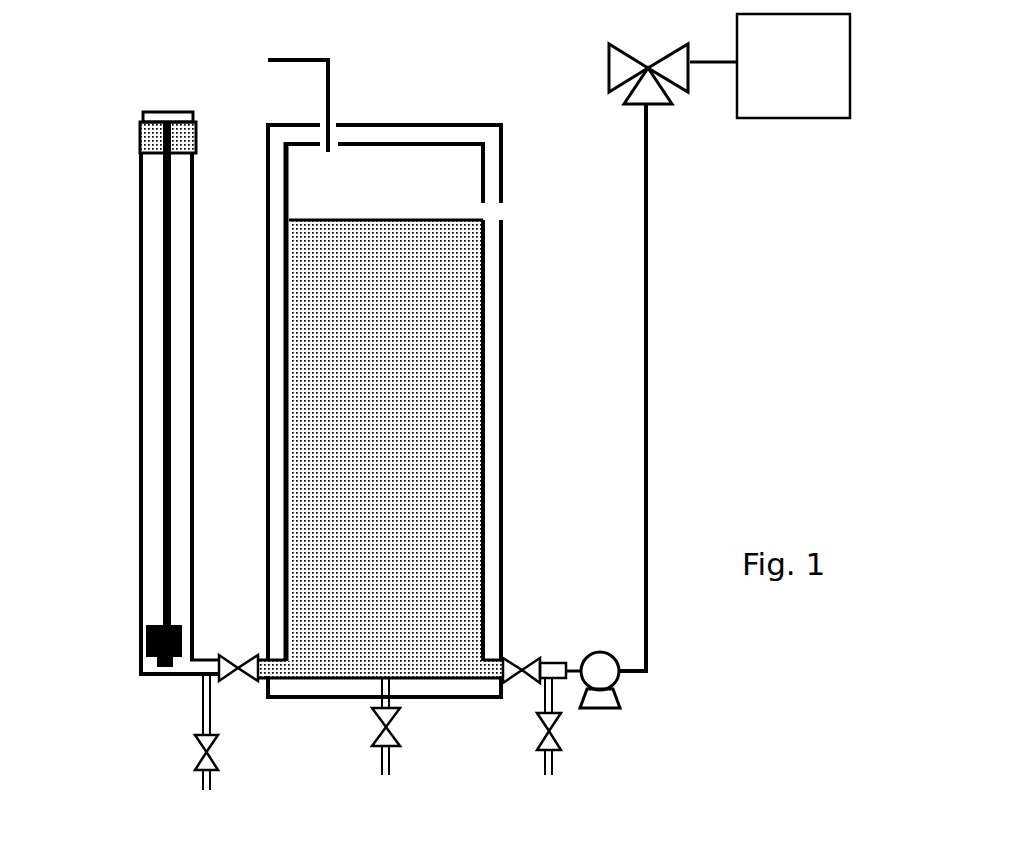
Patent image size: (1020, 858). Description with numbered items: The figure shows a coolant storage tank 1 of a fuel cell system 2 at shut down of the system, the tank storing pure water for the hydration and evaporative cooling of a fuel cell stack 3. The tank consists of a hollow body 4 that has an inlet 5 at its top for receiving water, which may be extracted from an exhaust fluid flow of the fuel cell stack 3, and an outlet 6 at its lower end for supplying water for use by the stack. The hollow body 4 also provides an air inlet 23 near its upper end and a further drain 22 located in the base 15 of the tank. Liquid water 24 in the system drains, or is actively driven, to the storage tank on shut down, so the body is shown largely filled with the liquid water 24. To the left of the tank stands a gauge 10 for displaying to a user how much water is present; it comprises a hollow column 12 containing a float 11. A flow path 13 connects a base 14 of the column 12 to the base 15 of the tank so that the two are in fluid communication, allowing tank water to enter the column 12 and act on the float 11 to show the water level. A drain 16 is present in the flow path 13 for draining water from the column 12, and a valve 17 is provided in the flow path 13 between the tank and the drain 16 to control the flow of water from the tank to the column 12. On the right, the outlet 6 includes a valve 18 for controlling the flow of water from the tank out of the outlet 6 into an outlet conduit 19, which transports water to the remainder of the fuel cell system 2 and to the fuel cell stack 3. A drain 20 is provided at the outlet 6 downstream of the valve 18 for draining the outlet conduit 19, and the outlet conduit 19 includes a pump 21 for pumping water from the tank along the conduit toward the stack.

The coolant storage tank 1 is at (414, 414).
The fuel cell system 2 is at (160, 46).
The fuel cell stack 3 is at (803, 76).
The hollow body 4 is at (487, 504).
The inlet 5 is at (336, 125).
The outlet 6 is at (515, 624).
The gauge 10 is at (137, 438).
The float 11 is at (145, 633).
The hollow column 12 is at (140, 194).
The flow path 13 is at (202, 668).
The base of the column 14 is at (182, 668).
The base of the water storage tank 15 is at (310, 710).
The drain 16 is at (197, 773).
The valve 17 is at (248, 660).
The valve 18 is at (532, 680).
The outlet conduit 19 is at (640, 452).
The drain 20 is at (558, 753).
The pump 21 is at (592, 672).
The further drain 22 is at (400, 742).
The air inlet 23 is at (493, 208).
The liquid water 24 is at (386, 452).